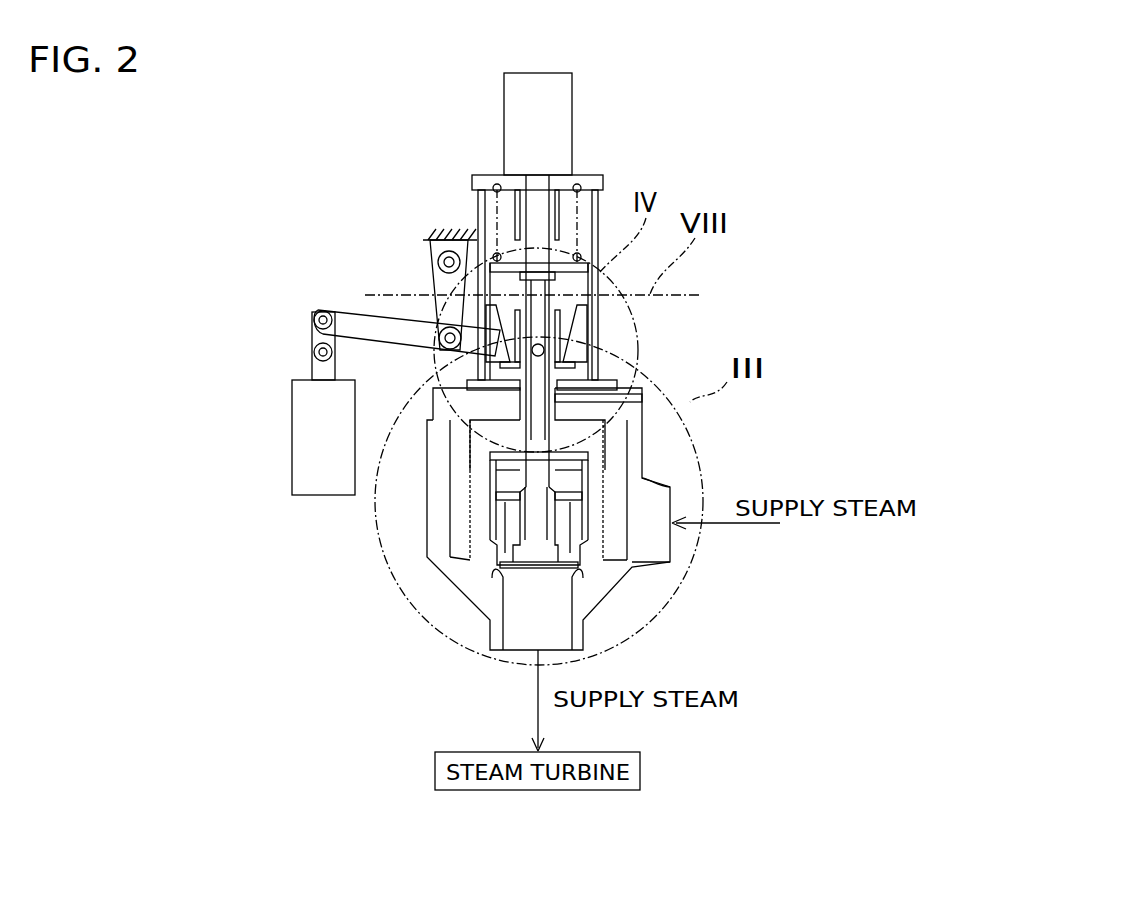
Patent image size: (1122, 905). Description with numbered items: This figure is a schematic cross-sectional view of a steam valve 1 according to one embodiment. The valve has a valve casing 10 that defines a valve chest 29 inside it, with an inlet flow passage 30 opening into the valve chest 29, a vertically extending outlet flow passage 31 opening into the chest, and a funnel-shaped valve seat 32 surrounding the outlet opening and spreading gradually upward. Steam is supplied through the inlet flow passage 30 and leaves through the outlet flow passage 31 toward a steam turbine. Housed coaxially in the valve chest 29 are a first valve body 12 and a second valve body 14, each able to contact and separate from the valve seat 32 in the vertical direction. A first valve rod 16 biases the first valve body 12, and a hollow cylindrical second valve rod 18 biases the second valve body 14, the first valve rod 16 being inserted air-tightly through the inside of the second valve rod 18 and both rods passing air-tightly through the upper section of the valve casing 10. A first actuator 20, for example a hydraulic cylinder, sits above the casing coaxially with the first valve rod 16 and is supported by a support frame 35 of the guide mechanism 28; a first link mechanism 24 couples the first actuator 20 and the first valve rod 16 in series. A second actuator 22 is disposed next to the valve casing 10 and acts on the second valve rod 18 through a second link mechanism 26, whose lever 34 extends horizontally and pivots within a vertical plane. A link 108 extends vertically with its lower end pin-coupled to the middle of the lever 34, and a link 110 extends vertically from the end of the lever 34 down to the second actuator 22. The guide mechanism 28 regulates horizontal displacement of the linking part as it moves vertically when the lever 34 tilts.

The steam valve 1 is at (693, 118).
The valve casing 10 is at (635, 438).
The first valve body 12 is at (575, 595).
The second valve body 14 is at (590, 570).
The first valve rod 16 is at (538, 520).
The second valve rod 18 is at (620, 385).
The first actuator 20 is at (575, 74).
The second actuator 22 is at (293, 490).
The first link mechanism 24 is at (468, 221).
The second link mechanism 26 is at (382, 283).
The guide mechanism 28 is at (585, 330).
The valve chest 29 is at (610, 462).
The inlet flow passage 30 is at (645, 500).
The outlet flow passage 31 is at (520, 650).
The valve seat 32 is at (500, 562).
The lever 34 is at (348, 312).
The support frame 35 is at (600, 285).
The link 108 is at (443, 288).
The link 110 is at (312, 335).